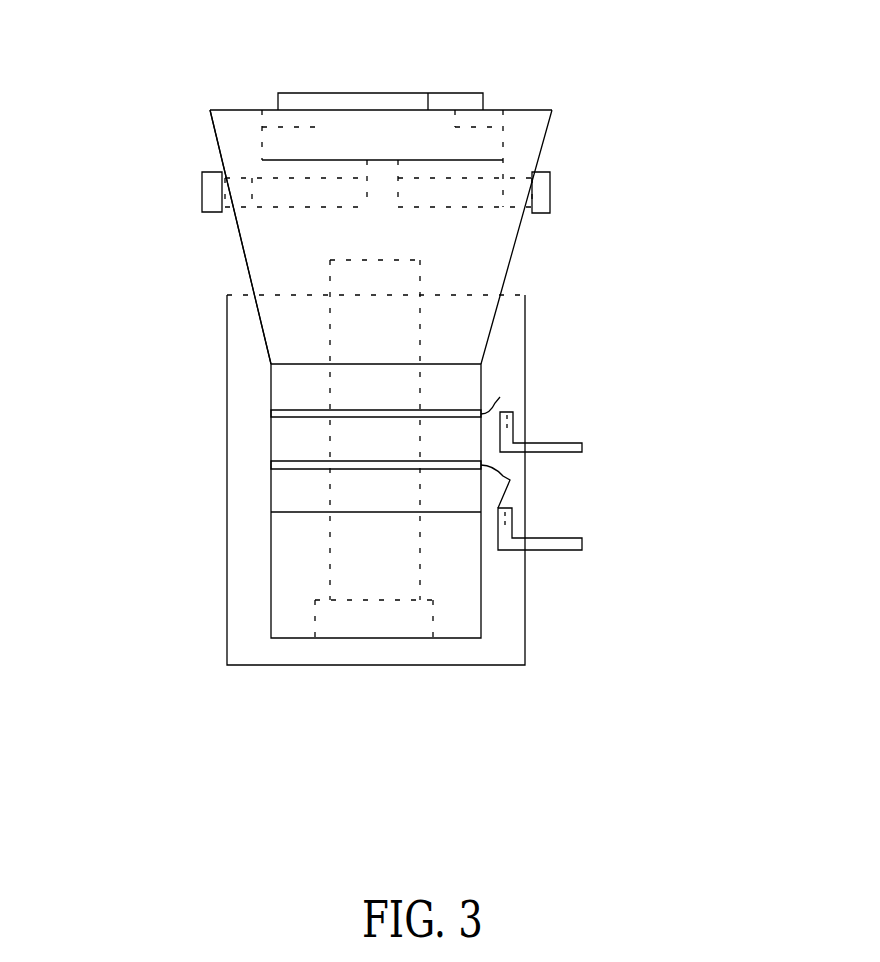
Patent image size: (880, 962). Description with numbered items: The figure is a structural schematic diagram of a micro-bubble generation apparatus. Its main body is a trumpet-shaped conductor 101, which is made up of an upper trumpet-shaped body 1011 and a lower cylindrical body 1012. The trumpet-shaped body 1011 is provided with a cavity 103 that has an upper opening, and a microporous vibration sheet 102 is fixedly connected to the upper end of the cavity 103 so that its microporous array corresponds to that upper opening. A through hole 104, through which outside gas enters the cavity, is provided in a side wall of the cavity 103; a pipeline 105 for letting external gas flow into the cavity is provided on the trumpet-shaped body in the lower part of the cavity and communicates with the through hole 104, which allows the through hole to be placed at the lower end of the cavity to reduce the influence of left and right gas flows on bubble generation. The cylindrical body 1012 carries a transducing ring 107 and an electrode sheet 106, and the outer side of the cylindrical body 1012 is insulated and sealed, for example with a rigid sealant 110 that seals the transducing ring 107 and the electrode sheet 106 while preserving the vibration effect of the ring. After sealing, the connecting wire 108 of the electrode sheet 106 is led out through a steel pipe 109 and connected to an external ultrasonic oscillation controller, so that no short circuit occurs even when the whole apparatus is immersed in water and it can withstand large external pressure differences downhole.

The trumpet-shaped conductor 101 is at (512, 232).
The upper trumpet-shaped body 1011 is at (248, 267).
The lower cylindrical body 1012 is at (271, 547).
The microporous vibration sheet 102 is at (340, 102).
The cavity 103 is at (277, 145).
The through hole 104 is at (350, 162).
The pipeline 105 is at (473, 180).
The electrode sheet 106 is at (272, 436).
The transducing ring 107 is at (272, 493).
The connecting wire 108 is at (533, 438).
The steel pipe 109 is at (551, 550).
The rigid sealant 110 is at (318, 740).